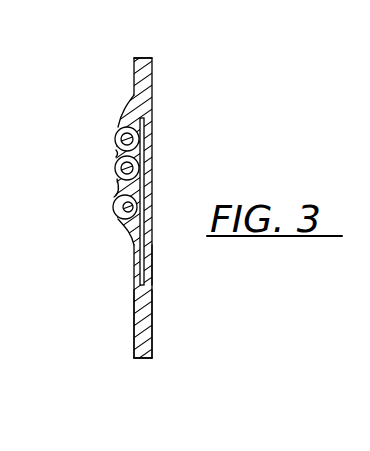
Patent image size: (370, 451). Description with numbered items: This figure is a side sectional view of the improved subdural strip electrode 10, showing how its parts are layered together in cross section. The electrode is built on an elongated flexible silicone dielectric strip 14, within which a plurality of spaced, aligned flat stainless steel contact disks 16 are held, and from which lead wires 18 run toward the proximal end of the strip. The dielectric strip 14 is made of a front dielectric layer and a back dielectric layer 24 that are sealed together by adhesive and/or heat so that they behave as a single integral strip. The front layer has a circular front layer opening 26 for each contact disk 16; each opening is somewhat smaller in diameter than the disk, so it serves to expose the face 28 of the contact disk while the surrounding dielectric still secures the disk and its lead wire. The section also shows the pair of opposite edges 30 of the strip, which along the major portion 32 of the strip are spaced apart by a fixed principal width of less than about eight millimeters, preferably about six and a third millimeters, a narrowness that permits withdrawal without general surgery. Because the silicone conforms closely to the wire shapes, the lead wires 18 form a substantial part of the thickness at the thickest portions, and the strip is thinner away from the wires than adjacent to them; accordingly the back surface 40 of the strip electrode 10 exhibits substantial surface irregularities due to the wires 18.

The subdural strip electrode 10 is at (204, 96).
The dielectric strip 14 is at (152, 335).
The contact disk 16 is at (140, 145).
The lead wire 18 is at (115, 141).
The back dielectric layer 24 is at (140, 87).
The front layer opening 26 is at (144, 283).
The face 28 is at (152, 260).
The opposite edges 30 is at (142, 58).
The major portion 32 is at (134, 331).
The back surface 40 is at (118, 192).